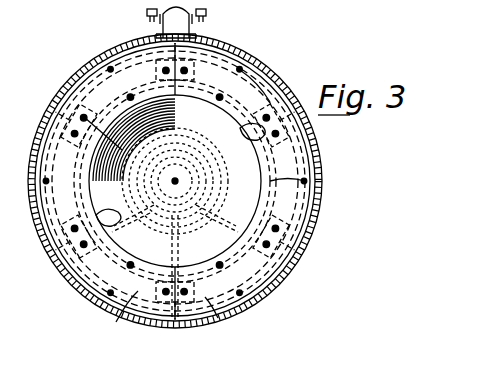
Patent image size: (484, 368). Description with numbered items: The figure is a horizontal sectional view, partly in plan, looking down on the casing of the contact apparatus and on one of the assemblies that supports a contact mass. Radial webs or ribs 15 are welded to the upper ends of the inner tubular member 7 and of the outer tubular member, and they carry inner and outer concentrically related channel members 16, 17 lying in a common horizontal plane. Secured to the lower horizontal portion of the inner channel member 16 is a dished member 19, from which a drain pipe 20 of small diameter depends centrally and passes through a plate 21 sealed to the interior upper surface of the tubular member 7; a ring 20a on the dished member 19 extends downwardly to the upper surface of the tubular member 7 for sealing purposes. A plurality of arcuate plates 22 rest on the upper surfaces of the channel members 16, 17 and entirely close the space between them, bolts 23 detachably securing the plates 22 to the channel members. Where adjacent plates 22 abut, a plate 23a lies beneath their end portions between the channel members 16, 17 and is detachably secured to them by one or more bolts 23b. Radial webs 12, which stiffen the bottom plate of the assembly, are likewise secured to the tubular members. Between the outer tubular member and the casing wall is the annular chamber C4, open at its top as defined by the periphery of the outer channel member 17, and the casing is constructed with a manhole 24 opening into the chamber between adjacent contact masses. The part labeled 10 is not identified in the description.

The inner tubular member 7 is at (212, 171).
The frame ring with radial webs 10 is at (299, 205).
The webs or ribs 12 is at (181, 200).
The webs or ribs 15 is at (195, 181).
The inner channel member 16 is at (94, 150).
The outer channel member 17 is at (192, 80).
The dished member 19 is at (96, 193).
The drain pipe 20 is at (178, 184).
The ring 20a is at (217, 224).
The plate 21 is at (133, 225).
The arcuate plates 22 is at (58, 140).
The bolts 23 is at (241, 70).
The plate 23a is at (175, 181).
The bolts 23b is at (104, 202).
The manhole 24 is at (196, 28).
The annular chamber C4 is at (62, 268).